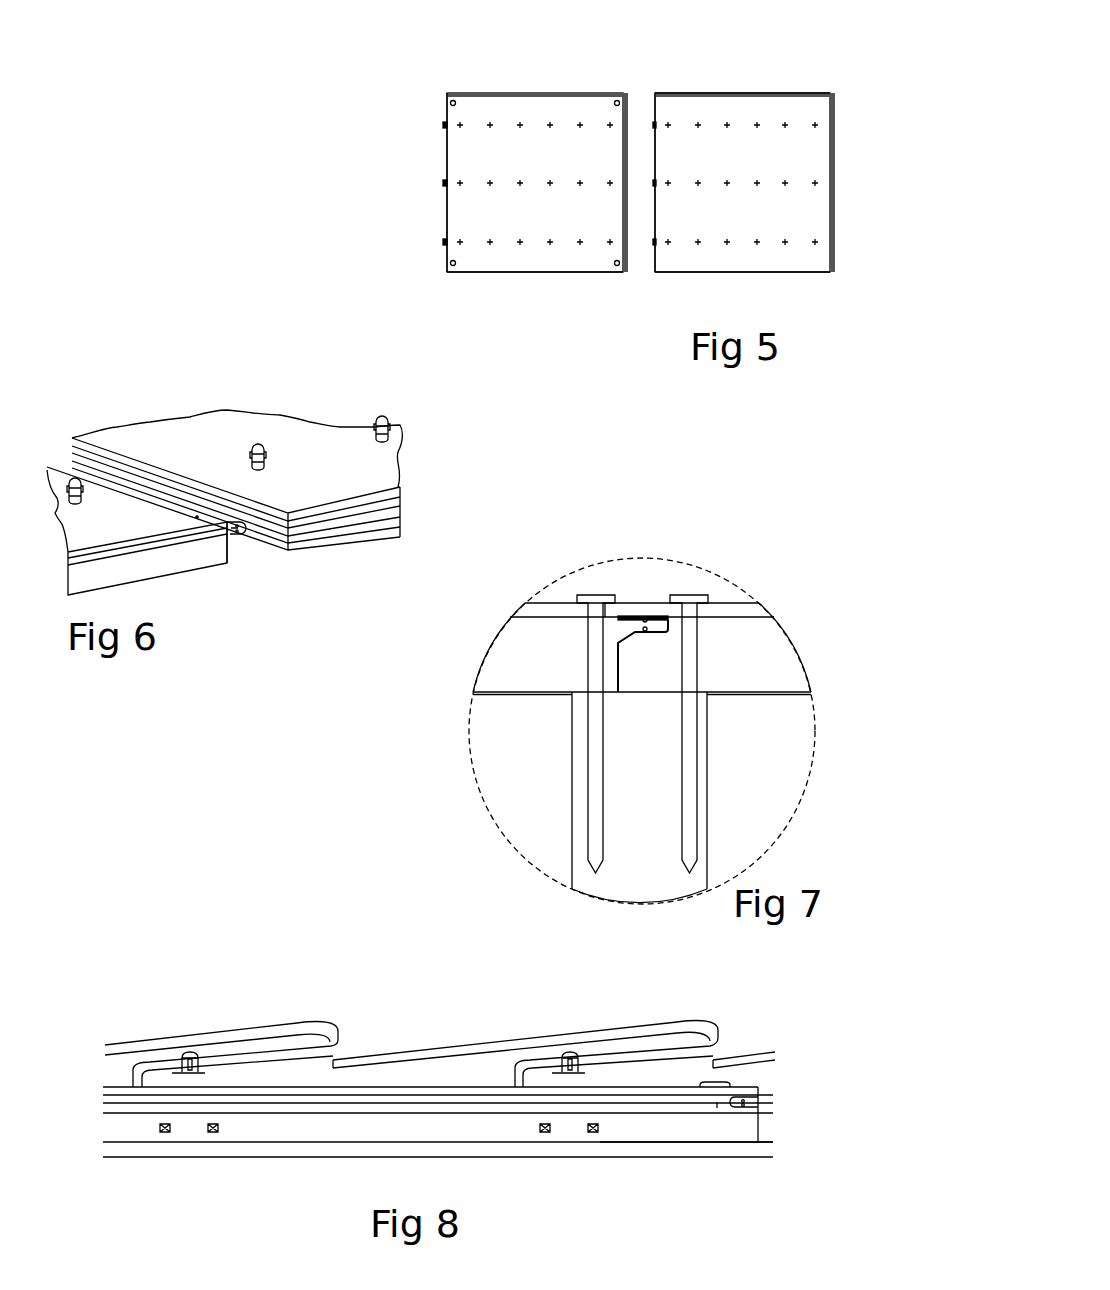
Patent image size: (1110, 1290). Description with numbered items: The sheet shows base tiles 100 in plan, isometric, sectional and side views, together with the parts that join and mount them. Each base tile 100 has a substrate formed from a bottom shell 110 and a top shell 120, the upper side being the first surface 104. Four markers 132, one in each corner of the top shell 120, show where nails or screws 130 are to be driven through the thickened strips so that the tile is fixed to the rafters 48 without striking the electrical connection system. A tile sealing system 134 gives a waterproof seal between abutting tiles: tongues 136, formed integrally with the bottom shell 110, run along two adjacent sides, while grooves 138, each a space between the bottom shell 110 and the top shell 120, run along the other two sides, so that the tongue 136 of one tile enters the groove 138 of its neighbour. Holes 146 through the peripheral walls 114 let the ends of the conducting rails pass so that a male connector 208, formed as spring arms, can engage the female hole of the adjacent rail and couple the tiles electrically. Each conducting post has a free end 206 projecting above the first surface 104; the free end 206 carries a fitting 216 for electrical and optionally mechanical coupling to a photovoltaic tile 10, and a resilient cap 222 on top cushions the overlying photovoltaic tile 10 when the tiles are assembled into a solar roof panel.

In FIG. 8, the photovoltaic tile 10 is at (135, 1042).
In FIG. 7, the rafters 48 is at (707, 831).
In FIG. 5, the base tile 100 is at (483, 70).
In FIG. 6, the base tile 100 is at (274, 492).
In FIG. 8, the base tile 100 is at (340, 1128).
In FIG. 6, the first surface 104 is at (192, 424).
In FIG. 8, the first surface 104 is at (470, 1087).
In FIG. 7, the bottom shell 110 is at (513, 695).
In FIG. 8, the bottom shell 110 is at (250, 1133).
In FIG. 8, the peripheral walls 114 is at (705, 1133).
In FIG. 7, the top shell 120 is at (546, 601).
In FIG. 8, the top shell 120 is at (352, 1090).
In FIG. 7, the nails or screws 130 is at (587, 747).
In FIG. 8, the nails or screws 130 is at (718, 1078).
In FIG. 5, the markers 132 is at (453, 100).
In FIG. 5, the tile sealing system 134 is at (637, 80).
In FIG. 6, the tile sealing system 134 is at (294, 595).
In FIG. 7, the tile sealing system 134 is at (652, 587).
In FIG. 5, the tongues 136 is at (510, 93).
In FIG. 6, the tongues 136 is at (241, 547).
In FIG. 7, the tongues 136 is at (641, 616).
In FIG. 8, the tongues 136 is at (756, 1103).
In FIG. 5, the grooves 138 is at (445, 207).
In FIG. 6, the grooves 138 is at (401, 500).
In FIG. 7, the grooves 138 is at (648, 620).
In FIG. 8, the grooves 138 is at (715, 1105).
In FIG. 8, the holes 146 is at (545, 1133).
In FIG. 6, the free end 206 is at (269, 411).
In FIG. 8, the free end 206 is at (575, 1060).
In FIG. 5, the male connector 208 is at (445, 125).
In FIG. 8, the male connector 208 is at (415, 1167).
In FIG. 6, the fitting 216 is at (246, 432).
In FIG. 6, the resilient cap 222 is at (259, 443).